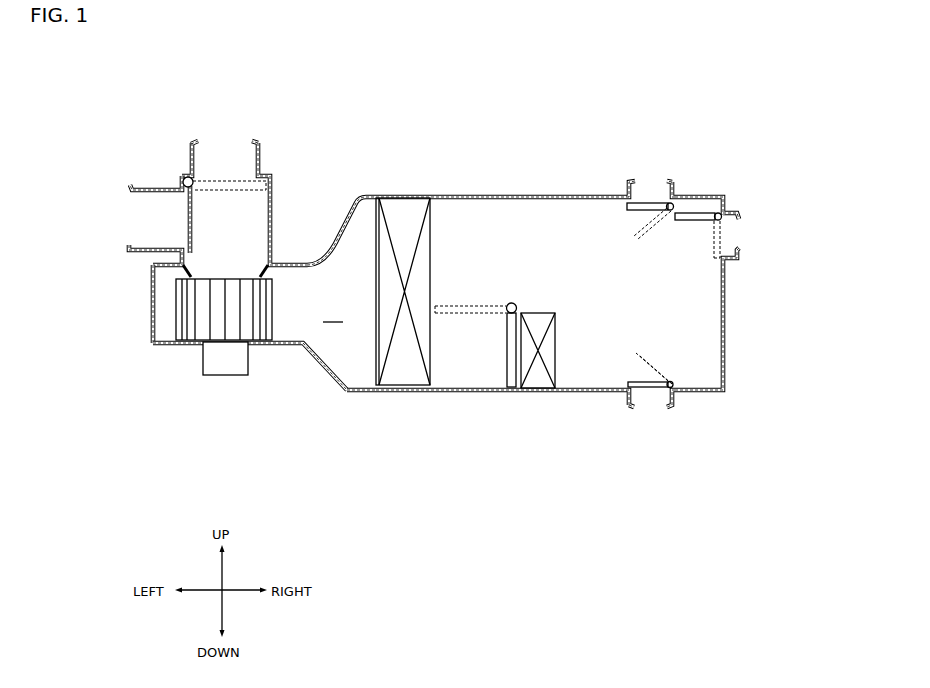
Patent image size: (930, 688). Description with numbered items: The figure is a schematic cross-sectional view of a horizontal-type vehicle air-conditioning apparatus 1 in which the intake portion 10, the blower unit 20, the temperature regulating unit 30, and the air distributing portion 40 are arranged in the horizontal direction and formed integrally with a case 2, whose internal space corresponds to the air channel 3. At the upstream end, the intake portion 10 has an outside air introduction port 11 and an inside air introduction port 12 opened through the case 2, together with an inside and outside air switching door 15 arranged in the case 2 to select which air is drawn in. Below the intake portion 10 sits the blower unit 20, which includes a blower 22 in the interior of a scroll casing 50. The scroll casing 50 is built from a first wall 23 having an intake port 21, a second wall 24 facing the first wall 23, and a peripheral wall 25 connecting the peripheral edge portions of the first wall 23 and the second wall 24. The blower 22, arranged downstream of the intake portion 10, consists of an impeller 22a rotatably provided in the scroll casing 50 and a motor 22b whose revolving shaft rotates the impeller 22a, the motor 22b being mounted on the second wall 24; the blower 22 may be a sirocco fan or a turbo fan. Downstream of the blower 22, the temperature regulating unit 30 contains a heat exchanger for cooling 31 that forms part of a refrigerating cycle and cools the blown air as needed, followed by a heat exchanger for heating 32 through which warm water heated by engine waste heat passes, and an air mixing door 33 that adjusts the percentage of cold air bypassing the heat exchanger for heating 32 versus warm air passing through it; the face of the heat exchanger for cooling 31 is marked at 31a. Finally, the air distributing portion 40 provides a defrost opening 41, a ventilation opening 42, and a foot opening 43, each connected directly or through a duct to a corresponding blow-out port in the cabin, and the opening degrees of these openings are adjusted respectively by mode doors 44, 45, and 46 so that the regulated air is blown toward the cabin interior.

The vehicle air-conditioning apparatus 1 is at (569, 106).
The case 2 is at (552, 195).
The air channel 3 is at (333, 311).
The intake portion 10 is at (184, 155).
The outside air introduction port 11 is at (262, 176).
The inside air introduction port 12 is at (183, 199).
The inside and outside air switching door 15 is at (185, 226).
The blower unit 20 is at (262, 352).
The intake port 21 is at (265, 268).
The blower 22 is at (118, 385).
The impeller 22a is at (176, 342).
The motor 22b is at (203, 370).
The first wall 23 is at (160, 258).
The second wall 24 is at (160, 347).
The peripheral wall 25 is at (158, 322).
The temperature regulating unit 30 is at (485, 191).
The heat exchanger for cooling 31 is at (403, 390).
The evaporator core surface 31a is at (375, 366).
The heat exchanger for heating 32 is at (555, 370).
The air mixing door 33 is at (507, 366).
The air distributing portion 40 is at (700, 401).
The defrost opening 41 is at (641, 200).
The ventilation opening 42 is at (722, 218).
The foot opening 43 is at (668, 403).
The mode door 44 is at (650, 203).
The mode door 45 is at (698, 214).
The mode door 46 is at (647, 390).
The scroll casing 50 is at (148, 289).